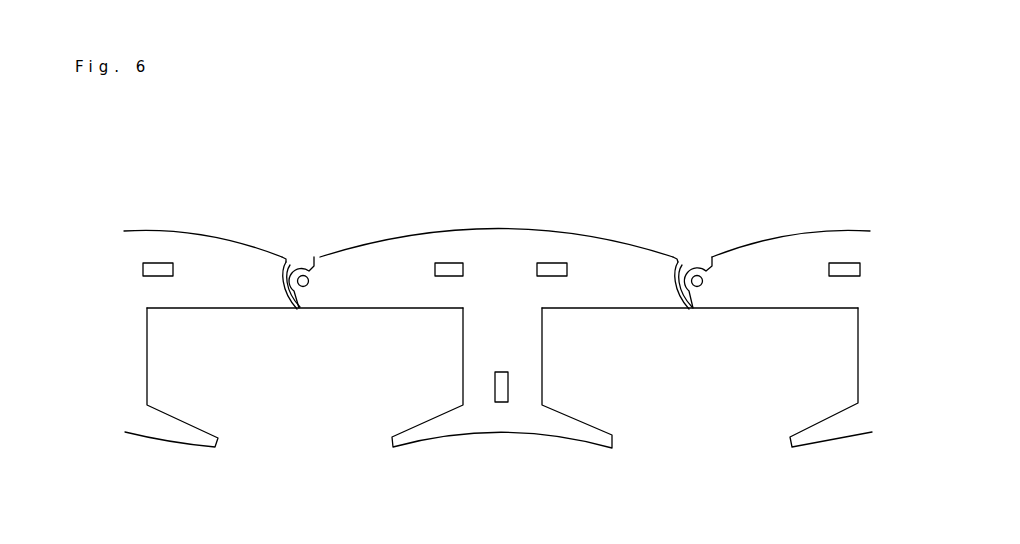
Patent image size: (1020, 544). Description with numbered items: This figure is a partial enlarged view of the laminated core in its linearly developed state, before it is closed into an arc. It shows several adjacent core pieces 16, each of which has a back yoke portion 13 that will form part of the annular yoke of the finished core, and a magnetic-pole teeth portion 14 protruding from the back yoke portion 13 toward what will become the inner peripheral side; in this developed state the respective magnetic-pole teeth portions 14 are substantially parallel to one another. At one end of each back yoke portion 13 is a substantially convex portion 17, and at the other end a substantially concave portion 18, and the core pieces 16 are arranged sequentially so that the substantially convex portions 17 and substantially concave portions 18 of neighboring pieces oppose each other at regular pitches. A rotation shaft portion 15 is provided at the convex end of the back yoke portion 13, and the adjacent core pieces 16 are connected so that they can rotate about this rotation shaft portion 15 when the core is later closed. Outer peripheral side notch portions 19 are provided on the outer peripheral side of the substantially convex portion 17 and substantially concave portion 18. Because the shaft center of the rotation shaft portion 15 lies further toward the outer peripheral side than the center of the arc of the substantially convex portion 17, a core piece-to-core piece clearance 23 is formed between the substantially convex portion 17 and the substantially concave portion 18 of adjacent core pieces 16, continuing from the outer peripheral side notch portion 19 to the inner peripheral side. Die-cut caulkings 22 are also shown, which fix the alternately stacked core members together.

The back yoke portion 13 is at (496, 337).
The magnetic-pole teeth portion 14 is at (485, 343).
The rotation shaft portion 15 is at (304, 268).
The core piece 16 is at (511, 230).
The substantially convex portion 17 is at (302, 310).
The substantially concave portion 18 is at (293, 308).
The outer peripheral side notch portion 19 is at (706, 268).
The die-cut caulking 22 is at (550, 270).
The core piece-to-core piece clearance 23 is at (283, 258).